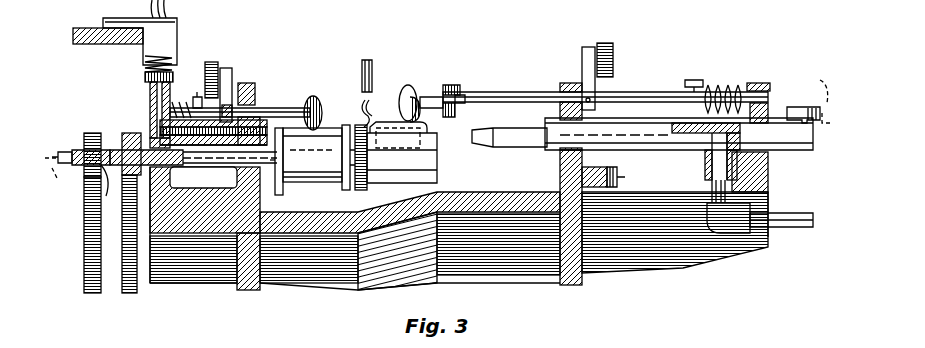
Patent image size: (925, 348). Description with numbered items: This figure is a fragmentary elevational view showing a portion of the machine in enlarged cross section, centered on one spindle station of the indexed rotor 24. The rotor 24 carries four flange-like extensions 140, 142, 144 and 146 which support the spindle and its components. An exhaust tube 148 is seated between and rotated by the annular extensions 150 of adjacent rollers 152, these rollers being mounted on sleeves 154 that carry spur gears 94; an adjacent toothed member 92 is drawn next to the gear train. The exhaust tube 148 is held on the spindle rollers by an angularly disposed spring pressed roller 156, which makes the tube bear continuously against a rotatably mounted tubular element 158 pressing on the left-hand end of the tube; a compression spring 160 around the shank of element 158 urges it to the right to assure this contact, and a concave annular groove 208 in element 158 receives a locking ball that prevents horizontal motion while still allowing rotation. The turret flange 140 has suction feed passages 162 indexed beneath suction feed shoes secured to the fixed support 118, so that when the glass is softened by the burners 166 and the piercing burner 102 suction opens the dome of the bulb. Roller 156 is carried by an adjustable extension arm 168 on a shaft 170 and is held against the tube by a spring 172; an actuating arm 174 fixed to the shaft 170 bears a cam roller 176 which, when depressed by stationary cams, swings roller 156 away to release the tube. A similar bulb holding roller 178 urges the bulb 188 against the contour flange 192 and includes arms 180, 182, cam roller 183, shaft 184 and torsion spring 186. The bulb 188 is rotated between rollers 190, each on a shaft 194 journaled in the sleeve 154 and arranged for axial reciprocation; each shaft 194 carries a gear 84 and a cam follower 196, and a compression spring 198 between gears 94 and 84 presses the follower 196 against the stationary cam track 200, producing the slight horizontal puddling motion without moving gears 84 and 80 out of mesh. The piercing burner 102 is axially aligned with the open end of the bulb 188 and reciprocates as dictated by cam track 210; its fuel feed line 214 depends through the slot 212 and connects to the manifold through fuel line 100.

The rotor 24 is at (520, 250).
The gear 80 is at (86, 264).
The gear 84 is at (93, 133).
The rack 92 is at (128, 293).
The spur gear 94 is at (130, 133).
The fuel line 100 is at (799, 208).
The piercing burner 102 is at (530, 130).
The fixed support 118 is at (90, 44).
The turret flange 140 is at (150, 97).
The flange-like extension 142 is at (247, 83).
The flange-like extension 144 is at (566, 83).
The flange-like extension 146 is at (108, 20).
The exhaust tube 148 is at (330, 128).
The annular extension 150 is at (343, 190).
The roller 152 is at (312, 155).
The sleeve 154 is at (242, 146).
The spring pressed roller 156 is at (313, 96).
The tubular element 158 is at (252, 136).
The compression spring 160 is at (210, 152).
The suction feed passage 162 is at (150, 72).
The burner 166 is at (400, 88).
The adjustable extension arm 168 is at (365, 62).
The shaft 170 is at (266, 130).
The spring 172 is at (176, 108).
The actuating arm 174 is at (228, 68).
The cam roller 176 is at (212, 62).
The bulb holding roller 178 is at (446, 85).
The arm 180 is at (460, 95).
The arm 182 is at (590, 47).
The cam roller 183 is at (612, 58).
The shaft 184 is at (640, 92).
The torsion spring 186 is at (720, 85).
The bulb 188 is at (393, 125).
The roller 190 is at (440, 163).
The contour flange 192 is at (375, 203).
The shaft 194 is at (70, 152).
The cam follower 196 is at (60, 152).
The compression spring 198 is at (102, 207).
The cam track 200 is at (63, 182).
The concave annular groove 208 is at (258, 124).
The cam track 210 is at (809, 92).
The slot 212 is at (607, 177).
The fuel feed line 214 is at (738, 160).